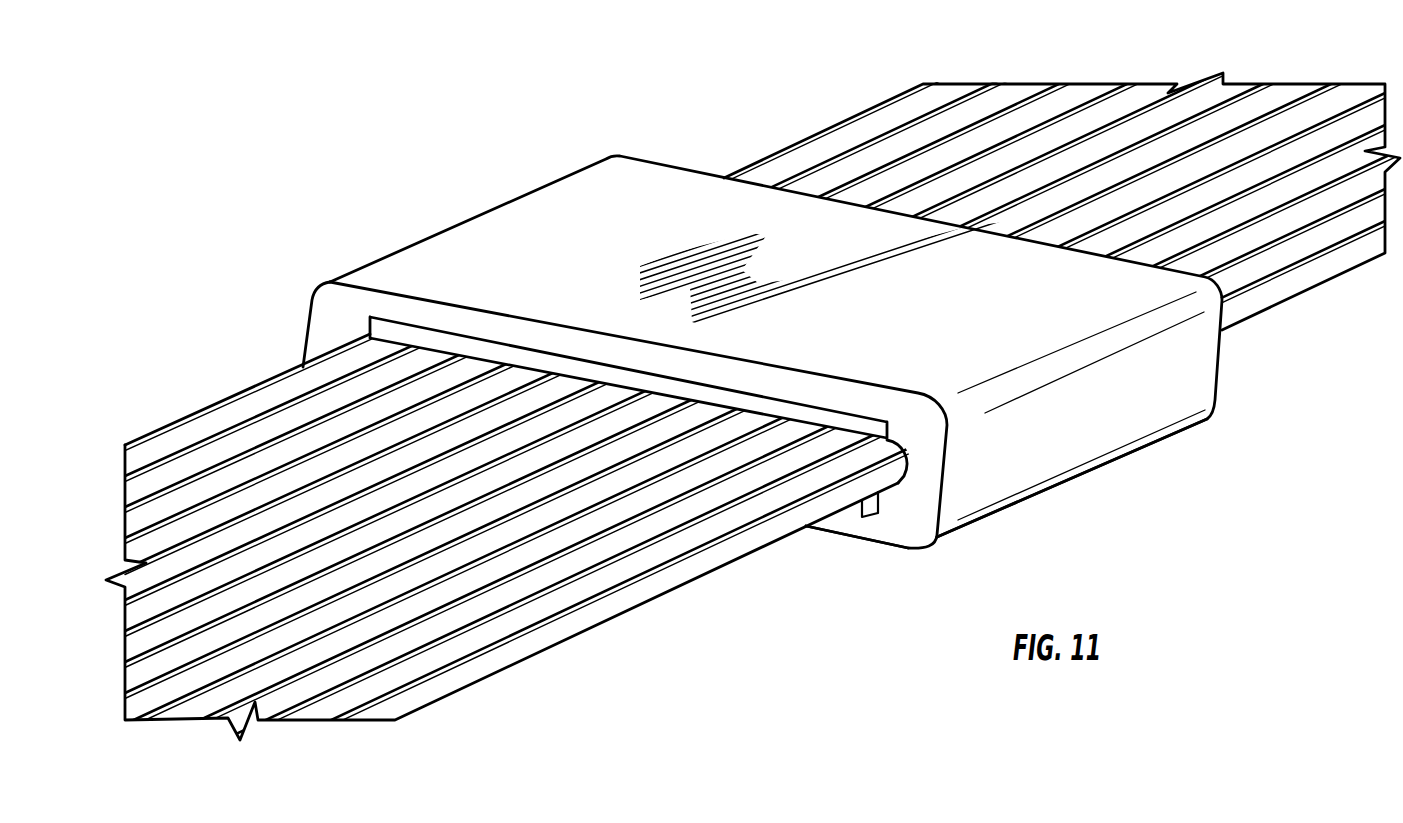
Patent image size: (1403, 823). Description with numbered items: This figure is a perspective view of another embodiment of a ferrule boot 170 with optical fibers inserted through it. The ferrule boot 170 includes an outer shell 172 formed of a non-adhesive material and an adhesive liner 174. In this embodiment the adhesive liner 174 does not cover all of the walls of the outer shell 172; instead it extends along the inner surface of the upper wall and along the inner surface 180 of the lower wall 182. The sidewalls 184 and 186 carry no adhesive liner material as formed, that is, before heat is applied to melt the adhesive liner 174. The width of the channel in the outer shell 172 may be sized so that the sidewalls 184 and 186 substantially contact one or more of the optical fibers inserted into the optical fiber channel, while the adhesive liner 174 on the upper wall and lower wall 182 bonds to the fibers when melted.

The ferrule boot 170 is at (683, 113).
The outer shell 172 is at (456, 222).
The adhesive liner 174 is at (312, 284).
The sidewall 184 is at (304, 338).
The sidewall 186 is at (1010, 508).
The inner surface 180 is at (864, 517).
The lower wall 182 is at (836, 524).